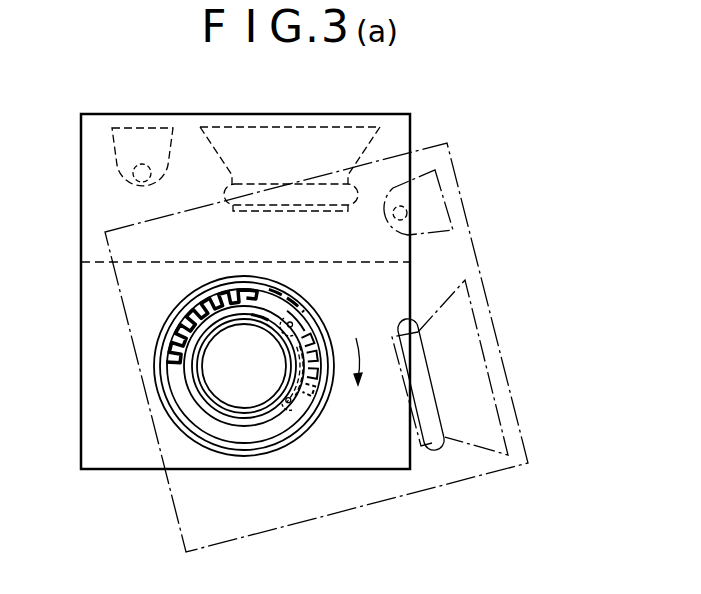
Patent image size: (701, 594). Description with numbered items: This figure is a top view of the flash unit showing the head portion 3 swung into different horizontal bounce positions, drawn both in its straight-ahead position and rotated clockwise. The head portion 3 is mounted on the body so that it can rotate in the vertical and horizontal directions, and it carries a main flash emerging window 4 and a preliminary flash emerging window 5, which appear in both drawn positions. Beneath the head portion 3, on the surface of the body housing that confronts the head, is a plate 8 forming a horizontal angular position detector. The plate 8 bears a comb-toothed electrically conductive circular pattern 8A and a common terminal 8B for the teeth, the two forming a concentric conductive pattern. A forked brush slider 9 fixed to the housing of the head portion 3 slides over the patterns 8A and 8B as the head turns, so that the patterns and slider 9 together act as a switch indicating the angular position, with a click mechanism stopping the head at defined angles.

The head portion 3 is at (100, 464).
The main flash emerging window 4 is at (358, 132).
The preliminary flash emerging window 5 is at (140, 131).
The plate 8 is at (273, 433).
The comb-toothed electrically conductive circular pattern 8A is at (167, 365).
The common terminal 8B is at (215, 415).
The forked brush slider 9 is at (290, 325).